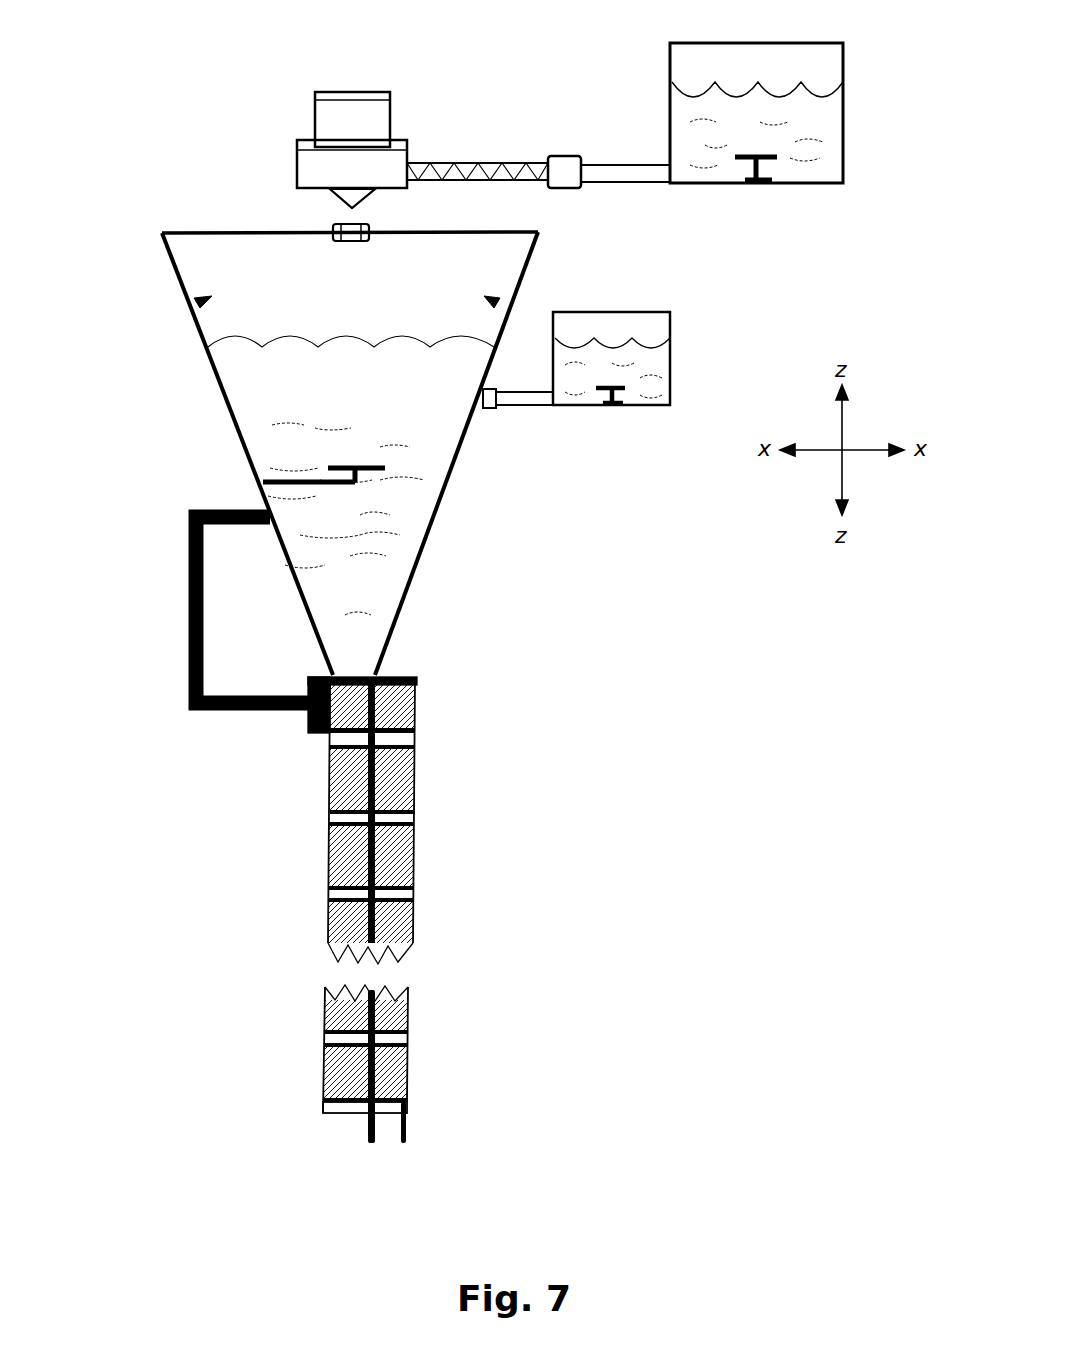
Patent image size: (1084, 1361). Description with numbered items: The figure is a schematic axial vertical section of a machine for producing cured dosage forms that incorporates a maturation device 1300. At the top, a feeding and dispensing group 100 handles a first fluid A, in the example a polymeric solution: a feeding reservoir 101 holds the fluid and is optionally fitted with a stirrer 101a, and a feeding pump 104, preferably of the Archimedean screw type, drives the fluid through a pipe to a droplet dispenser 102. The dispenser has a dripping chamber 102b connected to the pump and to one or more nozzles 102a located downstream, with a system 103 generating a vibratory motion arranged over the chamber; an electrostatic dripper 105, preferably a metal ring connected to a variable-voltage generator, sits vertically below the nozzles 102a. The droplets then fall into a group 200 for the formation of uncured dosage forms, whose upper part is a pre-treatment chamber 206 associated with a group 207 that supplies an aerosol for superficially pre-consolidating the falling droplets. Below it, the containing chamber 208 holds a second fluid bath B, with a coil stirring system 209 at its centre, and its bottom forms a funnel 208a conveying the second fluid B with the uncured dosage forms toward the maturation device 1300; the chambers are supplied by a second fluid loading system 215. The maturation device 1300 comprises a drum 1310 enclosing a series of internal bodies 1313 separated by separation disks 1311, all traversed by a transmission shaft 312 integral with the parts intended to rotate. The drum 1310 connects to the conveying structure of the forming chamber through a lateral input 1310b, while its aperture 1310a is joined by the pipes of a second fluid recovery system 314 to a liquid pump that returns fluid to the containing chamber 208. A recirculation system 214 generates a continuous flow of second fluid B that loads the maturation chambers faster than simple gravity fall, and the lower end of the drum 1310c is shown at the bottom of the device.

The feeding and dispensing group 100 is at (280, 92).
The feeding reservoir 101 is at (840, 58).
The stirrer 101a is at (778, 170).
The droplet dispenser 102 is at (425, 108).
The nozzle 102a is at (322, 200).
The dripping chamber 102b is at (297, 125).
The vibratory motion generating system 103 is at (350, 88).
The feeding pump 104 is at (564, 190).
The electrostatic dripper 105 is at (374, 231).
The group for the formation of uncured dosage forms 200 is at (419, 453).
The pre-treatment chamber 206 is at (148, 236).
The aerosol providing group 207 is at (474, 292).
The containing chamber 208 is at (497, 377).
The funnel 208a is at (394, 614).
The coil stirring system 209 is at (350, 462).
The recirculation system 214 is at (188, 508).
The second fluid loading system 215 is at (640, 315).
The transmission shaft 312 is at (374, 1073).
The second fluid recovery system 314 is at (292, 745).
The maturation device 1300 is at (468, 898).
The drum 1310 is at (400, 898).
The aperture 1310a is at (340, 718).
The lateral input 1310b is at (431, 636).
The tube outlet 1310c is at (352, 1136).
The separation disk 1311 is at (414, 887).
The internal body 1313 is at (405, 711).